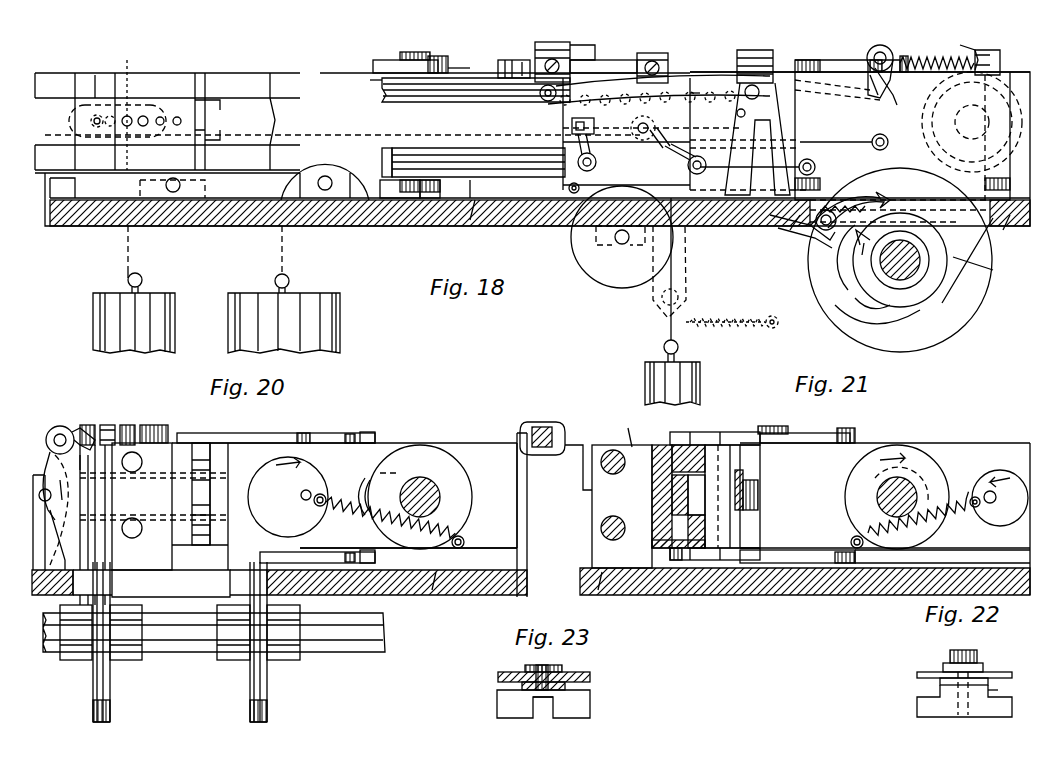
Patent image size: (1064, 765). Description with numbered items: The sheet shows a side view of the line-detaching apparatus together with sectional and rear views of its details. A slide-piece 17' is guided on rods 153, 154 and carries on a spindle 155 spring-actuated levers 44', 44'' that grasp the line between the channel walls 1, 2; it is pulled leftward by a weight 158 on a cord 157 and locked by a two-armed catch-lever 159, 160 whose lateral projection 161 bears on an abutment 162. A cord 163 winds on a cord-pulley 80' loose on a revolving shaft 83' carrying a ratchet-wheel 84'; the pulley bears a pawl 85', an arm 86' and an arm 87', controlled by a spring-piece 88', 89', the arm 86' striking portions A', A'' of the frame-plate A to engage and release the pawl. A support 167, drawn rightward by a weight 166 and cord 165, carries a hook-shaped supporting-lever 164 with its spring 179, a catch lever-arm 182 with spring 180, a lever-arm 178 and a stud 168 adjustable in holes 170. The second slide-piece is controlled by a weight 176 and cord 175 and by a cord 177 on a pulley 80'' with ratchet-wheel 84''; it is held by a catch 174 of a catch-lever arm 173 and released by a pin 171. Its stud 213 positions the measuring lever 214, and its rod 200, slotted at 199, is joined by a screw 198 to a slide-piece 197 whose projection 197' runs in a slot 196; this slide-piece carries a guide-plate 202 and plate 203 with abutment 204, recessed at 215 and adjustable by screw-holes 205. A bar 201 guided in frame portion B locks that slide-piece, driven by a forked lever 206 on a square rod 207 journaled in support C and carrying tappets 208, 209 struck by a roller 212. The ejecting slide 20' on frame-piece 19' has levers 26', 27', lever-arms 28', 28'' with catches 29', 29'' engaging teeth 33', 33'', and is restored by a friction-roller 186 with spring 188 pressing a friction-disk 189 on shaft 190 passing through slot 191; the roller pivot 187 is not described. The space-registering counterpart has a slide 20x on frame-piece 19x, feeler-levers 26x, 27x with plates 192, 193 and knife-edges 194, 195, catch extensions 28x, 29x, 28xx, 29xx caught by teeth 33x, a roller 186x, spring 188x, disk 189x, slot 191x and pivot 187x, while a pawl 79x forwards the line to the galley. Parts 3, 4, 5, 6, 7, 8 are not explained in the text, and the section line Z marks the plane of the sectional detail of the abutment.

In FIG. 18, the wall 1 is at (287, 121).
In FIG. 22, the wall 1 is at (660, 520).
In FIG. 18, the channel-wall 2 is at (167, 121).
In FIG. 20, the channel-wall 2 is at (200, 506).
In FIG. 22, the channel-wall 2 is at (700, 525).
In FIG. 22, the block 3 is at (688, 489).
In FIG. 22, the plate 4 is at (665, 552).
In FIG. 22, the block 5 is at (700, 543).
In FIG. 18, the wheel 6 is at (935, 122).
In FIG. 18, the wheel 7 is at (928, 102).
In FIG. 20, the wheel 7 is at (201, 494).
In FIG. 18, the stop 8 is at (975, 53).
In FIG. 18, the slide-piece 17' is at (844, 134).
In FIG. 18, the frame-piece 19x is at (370, 228).
In FIG. 22, the frame-piece 19x is at (942, 561).
In FIG. 20, the frame-piece 19' is at (500, 481).
In FIG. 20, the slide 20' is at (408, 481).
In FIG. 22, the slide 20x is at (861, 461).
In FIG. 18, the feeler-lever 26x is at (430, 192).
In FIG. 22, the feeler-lever 26x is at (740, 560).
In FIG. 20, the lever 26' is at (171, 581).
In FIG. 18, the feeler-lever 27x is at (450, 55).
In FIG. 22, the feeler-lever 27x is at (758, 422).
In FIG. 20, the lever 27' is at (276, 428).
In FIG. 20, the lever-arm 28' is at (313, 426).
In FIG. 20, the lever-arm 28'' is at (317, 547).
In FIG. 22, the catch-lever extension 28x is at (805, 427).
In FIG. 22, the catch-lever extension 28xx is at (812, 563).
In FIG. 20, the catch 29' is at (351, 426).
In FIG. 20, the catch 29'' is at (353, 546).
In FIG. 22, the catch 29x is at (856, 427).
In FIG. 22, the catch 29xx is at (852, 563).
In FIG. 18, the tooth 33x is at (405, 48).
In FIG. 20, the tooth 33' is at (375, 426).
In FIG. 20, the tooth 33'' is at (376, 547).
In FIG. 18, the spring-actuated lever 44' is at (838, 57).
In FIG. 20, the spring-actuated lever 44' is at (165, 425).
In FIG. 18, the spring-actuated lever 44'' is at (776, 168).
In FIG. 22, the spring-pawl 79x is at (678, 485).
In FIG. 21, the cord-pulley 80' is at (912, 260).
In FIG. 20, the cord-pulley 80' is at (118, 642).
In FIG. 20, the cord-pulley 80'' is at (278, 642).
In FIG. 21, the revolving shaft 83' is at (934, 285).
In FIG. 20, the revolving shaft 83' is at (214, 642).
In FIG. 21, the ratchet-wheel 84' is at (859, 324).
In FIG. 20, the ratchet-wheel 84' is at (95, 650).
In FIG. 20, the ratchet-wheel 84'' is at (254, 645).
In FIG. 21, the pawl 85' is at (850, 210).
In FIG. 21, the lever-arm 86' is at (803, 239).
In FIG. 21, the pawl-lever arm 87' is at (825, 261).
In FIG. 21, the spring-piece 88' is at (931, 266).
In FIG. 21, the spring-piece 89' is at (840, 310).
In FIG. 18, the rod 153 is at (415, 96).
In FIG. 20, the rod 153 is at (142, 506).
In FIG. 22, the rod 153 is at (622, 506).
In FIG. 18, the rod 154 is at (400, 150).
In FIG. 20, the rod 154 is at (149, 527).
In FIG. 22, the rod 154 is at (611, 520).
In FIG. 18, the spindle 155 is at (985, 140).
In FIG. 18, the cord 157 is at (284, 240).
In FIG. 18, the weight 158 is at (342, 314).
In FIG. 18, the catch-lever arm 159 is at (837, 89).
In FIG. 20, the catch-lever arm 159 is at (100, 475).
In FIG. 18, the lever-arm 160 is at (710, 100).
In FIG. 18, the lateral projection 161 is at (855, 88).
In FIG. 20, the lateral projection 161 is at (112, 470).
In FIG. 18, the abutment 162 is at (885, 75).
In FIG. 20, the abutment 162 is at (127, 421).
In FIG. 18, the cord 163 is at (870, 165).
In FIG. 20, the cord 163 is at (93, 710).
In FIG. 18, the supporting-lever 164 is at (547, 100).
In FIG. 18, the cord 165 is at (580, 200).
In FIG. 18, the weight 166 is at (700, 375).
In FIG. 18, the support 167 is at (601, 152).
In FIG. 18, the stud 168 is at (659, 89).
In FIG. 18, the set of holes 170 is at (668, 100).
In FIG. 18, the pin 171 is at (937, 55).
In FIG. 20, the pin 171 is at (148, 421).
In FIG. 18, the catch-lever arm 173 is at (514, 57).
In FIG. 18, the catch 174 is at (520, 78).
In FIG. 18, the cord 175 is at (128, 240).
In FIG. 18, the weight 176 is at (176, 312).
In FIG. 20, the cord 177 is at (250, 690).
In FIG. 18, the lever-arm 178 is at (665, 128).
In FIG. 18, the spring 179 is at (685, 159).
In FIG. 18, the spring 180 is at (573, 160).
In FIG. 18, the lever-arm 182 is at (560, 140).
In FIG. 20, the friction-roller 186 is at (288, 497).
In FIG. 22, the friction-roller 186x is at (995, 470).
In FIG. 20, the pin 187 is at (304, 498).
In FIG. 22, the pin 187x is at (992, 504).
In FIG. 20, the spring 188 is at (352, 495).
In FIG. 22, the spring 188x is at (915, 520).
In FIG. 20, the friction-disk 189 is at (455, 475).
In FIG. 22, the friction-disk 189x is at (848, 492).
In FIG. 20, the revolving shaft 190 is at (440, 497).
In FIG. 22, the revolving shaft 190 is at (880, 505).
In FIG. 20, the slot 191 is at (358, 480).
In FIG. 22, the slot 191x is at (930, 485).
In FIG. 18, the projecting plate 192 is at (463, 71).
In FIG. 22, the projecting plate 192 is at (672, 440).
In FIG. 18, the projecting plate 193 is at (437, 186).
In FIG. 22, the projecting plate 193 is at (668, 560).
In FIG. 18, the knife-edge 194 is at (365, 87).
In FIG. 22, the knife-edge 194 is at (700, 445).
In FIG. 18, the knife-edge 195 is at (395, 170).
In FIG. 22, the knife-edge 195 is at (703, 560).
In FIG. 18, the slot 196 is at (265, 75).
In FIG. 22, the slot 196 is at (714, 496).
In FIG. 18, the slide-piece 197 is at (78, 72).
In FIG. 22, the slide-piece 197 is at (945, 694).
In FIG. 22, the projection 197' is at (1004, 687).
In FIG. 18, the screw 198 is at (100, 118).
In FIG. 22, the screw 198 is at (745, 494).
In FIG. 18, the slot 199 is at (110, 125).
In FIG. 23, the slot 199 is at (550, 668).
In FIG. 18, the rod 200 is at (221, 121).
In FIG. 22, the rod 200 is at (738, 470).
In FIG. 23, the rod 200 is at (528, 668).
In FIG. 20, the bar 201 is at (43, 522).
In FIG. 22, the guide-plate 202 is at (740, 455).
In FIG. 23, the guide-plate 202 is at (498, 677).
In FIG. 18, the plate 203 is at (160, 105).
In FIG. 22, the plate 203 is at (940, 681).
In FIG. 23, the plate 203 is at (522, 688).
In FIG. 18, the abutment 204 is at (200, 135).
In FIG. 23, the abutment 204 is at (497, 707).
In FIG. 18, the set of screw-holes 205 is at (177, 128).
In FIG. 20, the forked lever 206 is at (50, 462).
In FIG. 18, the square rod 207 is at (622, 62).
In FIG. 20, the square rod 207 is at (52, 430).
In FIG. 22, the square rod 207 is at (556, 433).
In FIG. 18, the tappet 208 is at (572, 58).
In FIG. 20, the tappet 208 is at (85, 425).
In FIG. 18, the tappet 209 is at (660, 58).
In FIG. 20, the tappet 209 is at (65, 426).
In FIG. 18, the roller 212 is at (876, 90).
In FIG. 20, the roller 212 is at (105, 421).
In FIG. 18, the stud 213 is at (640, 128).
In FIG. 18, the lever 214 is at (668, 146).
In FIG. 23, the recess 215 is at (545, 705).
In FIG. 18, the frame-plate A is at (468, 223).
In FIG. 20, the frame-plate A is at (430, 593).
In FIG. 22, the frame-plate A is at (595, 593).
In FIG. 18, the frame-plate portion A' is at (1011, 231).
In FIG. 18, the frame-plate portion A'' is at (779, 231).
In FIG. 22, the frame portion B is at (628, 427).
In FIG. 18, the support C is at (740, 55).
In FIG. 20, the support C is at (48, 525).
In FIG. 18, the section line Z is at (155, 120).